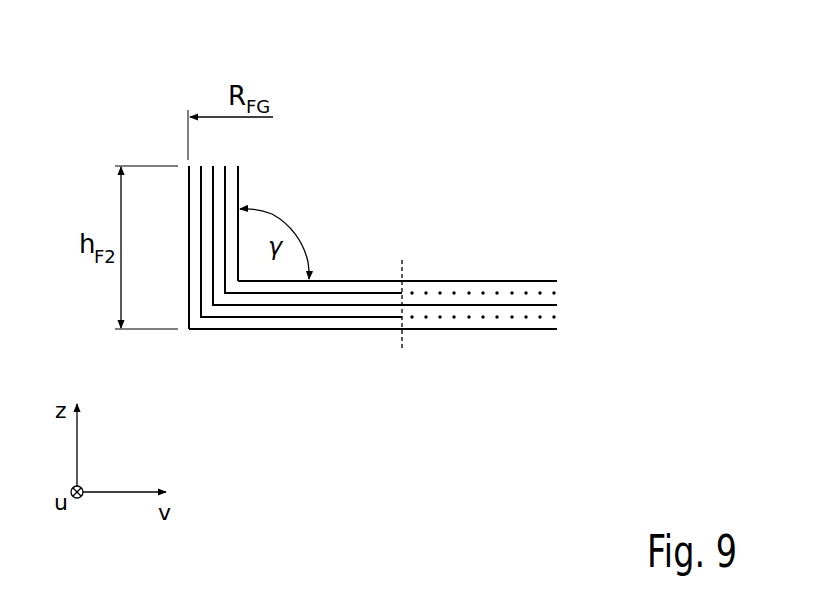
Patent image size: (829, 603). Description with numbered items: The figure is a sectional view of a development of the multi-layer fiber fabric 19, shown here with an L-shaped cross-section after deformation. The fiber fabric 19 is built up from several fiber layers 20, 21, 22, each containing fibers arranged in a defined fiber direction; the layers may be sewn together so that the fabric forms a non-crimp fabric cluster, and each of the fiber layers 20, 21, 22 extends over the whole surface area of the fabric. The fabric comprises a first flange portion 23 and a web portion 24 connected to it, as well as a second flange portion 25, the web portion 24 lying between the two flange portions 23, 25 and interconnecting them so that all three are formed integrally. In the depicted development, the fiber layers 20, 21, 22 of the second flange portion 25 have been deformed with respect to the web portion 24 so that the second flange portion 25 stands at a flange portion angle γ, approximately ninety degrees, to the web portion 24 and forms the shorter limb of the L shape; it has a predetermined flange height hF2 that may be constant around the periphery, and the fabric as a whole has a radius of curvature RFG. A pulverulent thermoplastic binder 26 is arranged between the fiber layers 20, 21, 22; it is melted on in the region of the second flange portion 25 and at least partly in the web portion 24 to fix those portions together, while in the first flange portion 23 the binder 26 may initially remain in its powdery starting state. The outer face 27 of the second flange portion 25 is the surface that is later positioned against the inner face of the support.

The multi-layer fiber fabric 19 is at (188, 81).
The first fiber layer 20 is at (541, 330).
The second fiber layer 21 is at (557, 303).
The third fiber layer 22 is at (538, 280).
The first flange portion 23 is at (503, 333).
The web portion 24 is at (303, 333).
The second flange portion 25 is at (240, 177).
The pulverulent binder 26 is at (365, 292).
The outer face 27 is at (188, 205).